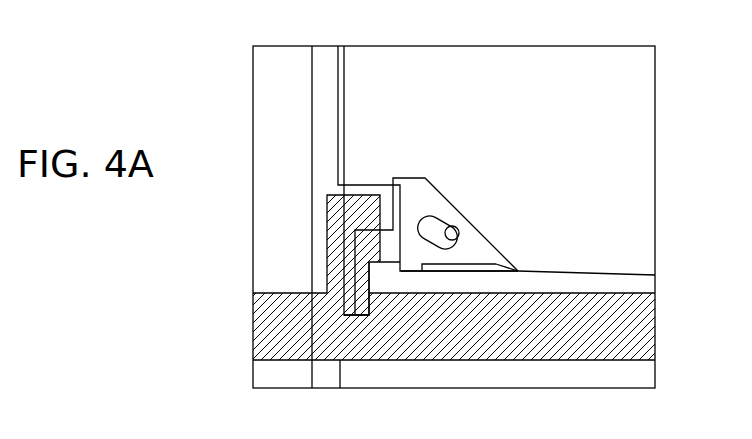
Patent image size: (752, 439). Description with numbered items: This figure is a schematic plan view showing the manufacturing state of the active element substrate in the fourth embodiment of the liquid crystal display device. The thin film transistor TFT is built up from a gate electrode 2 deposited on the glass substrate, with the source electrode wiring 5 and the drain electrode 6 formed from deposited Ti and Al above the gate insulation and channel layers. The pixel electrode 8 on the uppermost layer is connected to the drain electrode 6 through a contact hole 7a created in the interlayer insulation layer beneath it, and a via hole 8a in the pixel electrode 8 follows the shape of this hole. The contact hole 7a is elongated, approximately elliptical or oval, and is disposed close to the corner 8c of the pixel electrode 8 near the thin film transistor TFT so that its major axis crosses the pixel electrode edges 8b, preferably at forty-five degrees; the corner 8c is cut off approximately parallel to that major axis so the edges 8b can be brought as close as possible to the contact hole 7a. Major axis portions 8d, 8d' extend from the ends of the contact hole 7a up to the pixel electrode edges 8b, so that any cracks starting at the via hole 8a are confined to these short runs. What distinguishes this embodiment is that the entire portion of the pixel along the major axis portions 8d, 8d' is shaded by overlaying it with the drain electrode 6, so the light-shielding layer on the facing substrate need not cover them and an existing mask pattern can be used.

The gate electrode 2 is at (622, 325).
The source electrode wiring 5 is at (312, 132).
The drain electrode 6 is at (427, 172).
The contact hole 7a is at (448, 226).
The pixel electrode 8 is at (395, 221).
The via hole 8a is at (449, 230).
The pixel electrode edges 8b is at (468, 271).
The corner of the pixel electrode 8c is at (424, 271).
The major axis portion 8d is at (436, 219).
The major axis portion 8d' is at (512, 240).
The thin film transistor TFT is at (381, 278).